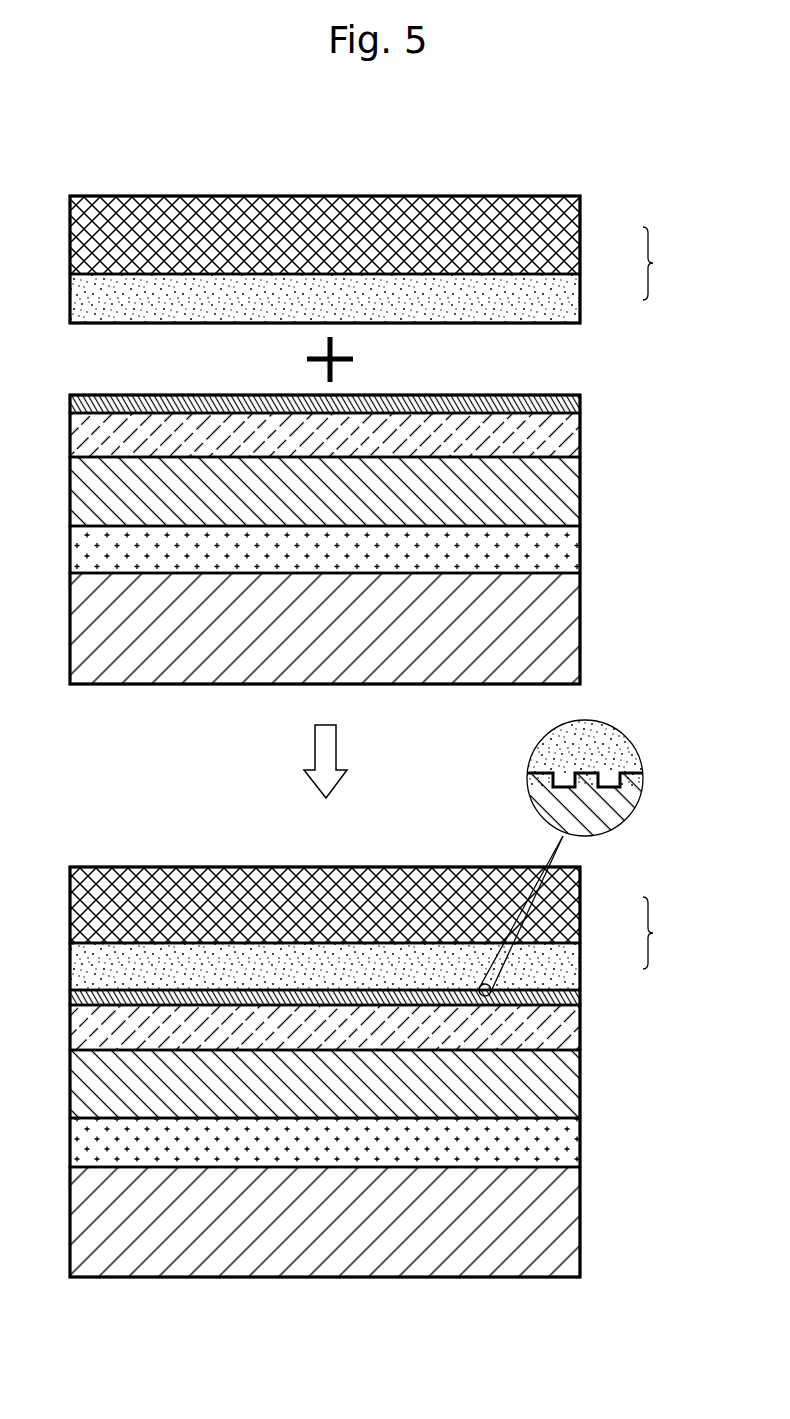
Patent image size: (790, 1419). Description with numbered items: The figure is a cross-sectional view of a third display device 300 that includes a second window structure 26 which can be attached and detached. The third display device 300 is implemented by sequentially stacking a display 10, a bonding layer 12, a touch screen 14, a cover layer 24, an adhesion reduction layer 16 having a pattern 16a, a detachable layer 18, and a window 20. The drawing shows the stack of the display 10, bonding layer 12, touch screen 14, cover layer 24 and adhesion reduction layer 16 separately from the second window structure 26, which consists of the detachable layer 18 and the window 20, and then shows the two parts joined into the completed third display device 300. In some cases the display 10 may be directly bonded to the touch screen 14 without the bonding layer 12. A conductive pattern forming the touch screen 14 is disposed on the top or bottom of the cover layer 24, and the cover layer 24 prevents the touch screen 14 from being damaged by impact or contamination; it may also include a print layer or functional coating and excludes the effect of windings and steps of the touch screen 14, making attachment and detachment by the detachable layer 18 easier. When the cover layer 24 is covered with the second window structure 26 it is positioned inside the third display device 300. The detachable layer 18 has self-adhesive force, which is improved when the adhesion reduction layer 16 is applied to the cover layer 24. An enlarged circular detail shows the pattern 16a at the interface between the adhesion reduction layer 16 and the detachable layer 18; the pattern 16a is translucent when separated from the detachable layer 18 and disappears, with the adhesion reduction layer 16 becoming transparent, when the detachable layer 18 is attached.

The third display device 300 is at (93, 133).
The window 20 is at (580, 233).
The detachable layer 18 is at (580, 302).
The second window structure 26 is at (665, 598).
The adhesion reduction layer 16 is at (580, 405).
The pattern 16a is at (476, 987).
The cover layer 24 is at (580, 432).
The touch screen 14 is at (580, 486).
The bonding layer 12 is at (580, 539).
The display 10 is at (580, 626).